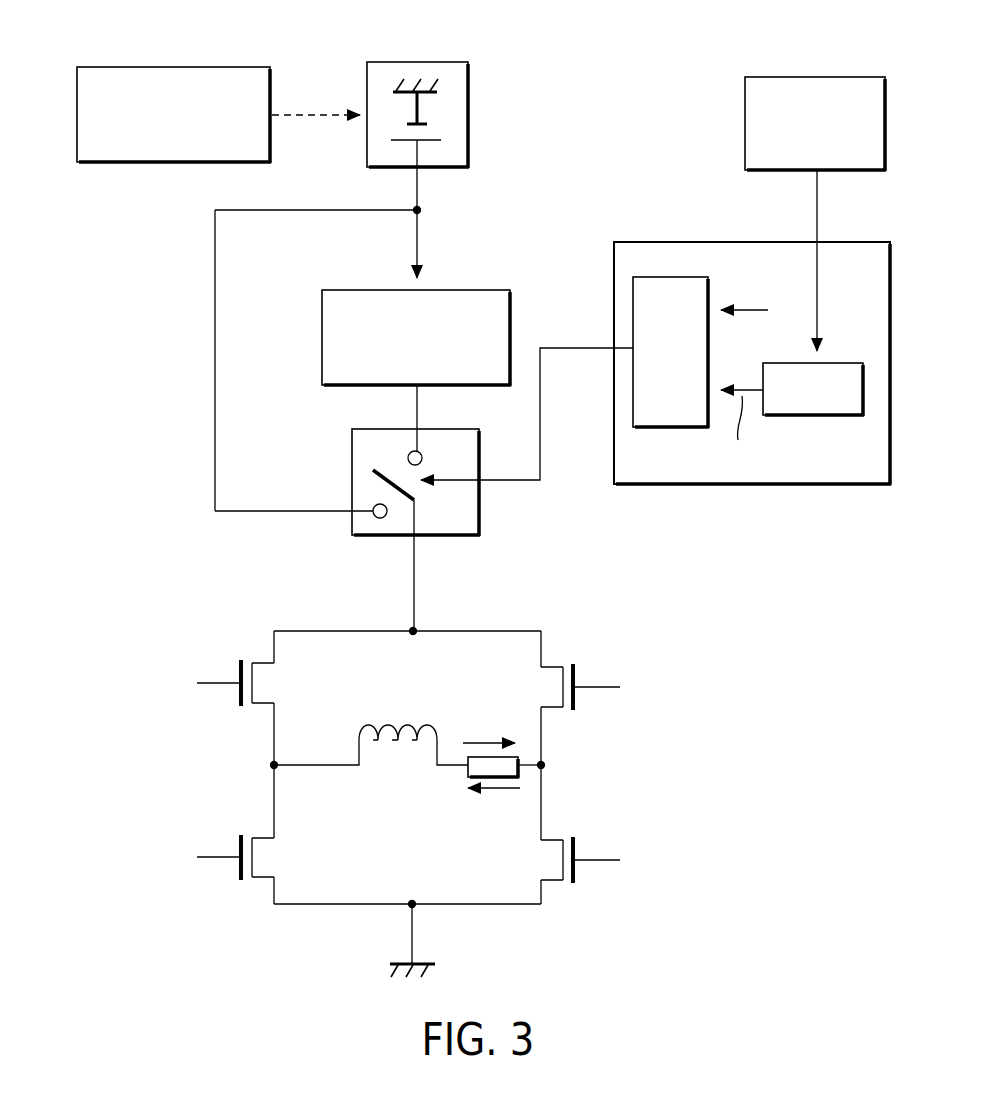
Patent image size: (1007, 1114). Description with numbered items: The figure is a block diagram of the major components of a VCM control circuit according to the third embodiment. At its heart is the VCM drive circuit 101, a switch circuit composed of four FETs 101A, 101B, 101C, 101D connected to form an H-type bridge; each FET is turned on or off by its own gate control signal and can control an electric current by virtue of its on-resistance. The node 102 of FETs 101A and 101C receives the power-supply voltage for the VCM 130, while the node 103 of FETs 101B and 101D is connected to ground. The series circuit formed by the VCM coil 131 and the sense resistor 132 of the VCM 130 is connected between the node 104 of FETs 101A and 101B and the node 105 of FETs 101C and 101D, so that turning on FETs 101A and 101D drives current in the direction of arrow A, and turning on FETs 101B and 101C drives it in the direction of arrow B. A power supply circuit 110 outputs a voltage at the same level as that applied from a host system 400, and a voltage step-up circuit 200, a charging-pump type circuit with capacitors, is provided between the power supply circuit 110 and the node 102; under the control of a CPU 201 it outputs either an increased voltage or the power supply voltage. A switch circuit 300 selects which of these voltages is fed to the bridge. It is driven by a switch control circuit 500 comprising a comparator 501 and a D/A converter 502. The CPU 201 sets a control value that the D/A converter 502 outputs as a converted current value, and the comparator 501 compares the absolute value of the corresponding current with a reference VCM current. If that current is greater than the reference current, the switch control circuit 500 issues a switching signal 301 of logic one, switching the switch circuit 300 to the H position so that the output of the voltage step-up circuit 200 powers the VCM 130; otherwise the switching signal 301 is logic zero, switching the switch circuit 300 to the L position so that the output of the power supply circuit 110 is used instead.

The host system 400 is at (229, 76).
The power supply circuit 110 is at (452, 78).
The CPU 201 is at (850, 77).
The switch control circuit 500 is at (752, 339).
The comparator 501 is at (678, 417).
The D/A converter 502 is at (845, 407).
The switching signal 301 is at (585, 347).
The voltage step-up circuit 200 is at (490, 305).
The switch circuit 300 is at (352, 452).
The VCM drive circuit 101 is at (380, 772).
The FET 101A is at (239, 665).
The FET 101B is at (239, 840).
The FET 101C is at (578, 668).
The FET 101D is at (578, 843).
The node 102 is at (411, 628).
The node 103 is at (405, 906).
The node 104 is at (272, 764).
The node 105 is at (545, 764).
The VCM 130 is at (407, 756).
The VCM coil 131 is at (402, 727).
The sense resistor 132 is at (466, 773).